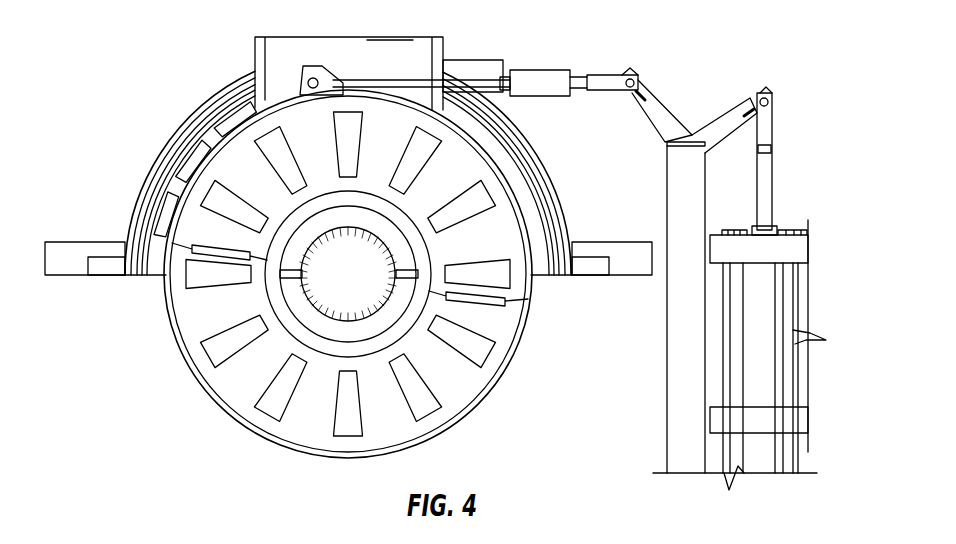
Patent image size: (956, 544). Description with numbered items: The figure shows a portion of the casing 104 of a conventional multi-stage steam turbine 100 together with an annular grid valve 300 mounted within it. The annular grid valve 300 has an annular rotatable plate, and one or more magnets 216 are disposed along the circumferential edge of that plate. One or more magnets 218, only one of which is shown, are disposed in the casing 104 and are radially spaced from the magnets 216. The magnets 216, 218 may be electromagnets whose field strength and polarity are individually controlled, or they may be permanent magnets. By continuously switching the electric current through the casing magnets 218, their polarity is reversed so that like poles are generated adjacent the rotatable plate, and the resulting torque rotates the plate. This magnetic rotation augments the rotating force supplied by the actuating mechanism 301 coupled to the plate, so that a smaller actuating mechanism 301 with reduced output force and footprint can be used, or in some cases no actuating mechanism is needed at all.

The multi-stage steam turbine 100 is at (348, 156).
The casing 104 is at (150, 162).
The magnets 216 is at (240, 118).
The magnets 218 is at (190, 143).
The annular grid valve 300 is at (205, 403).
The actuating mechanism 301 is at (786, 201).